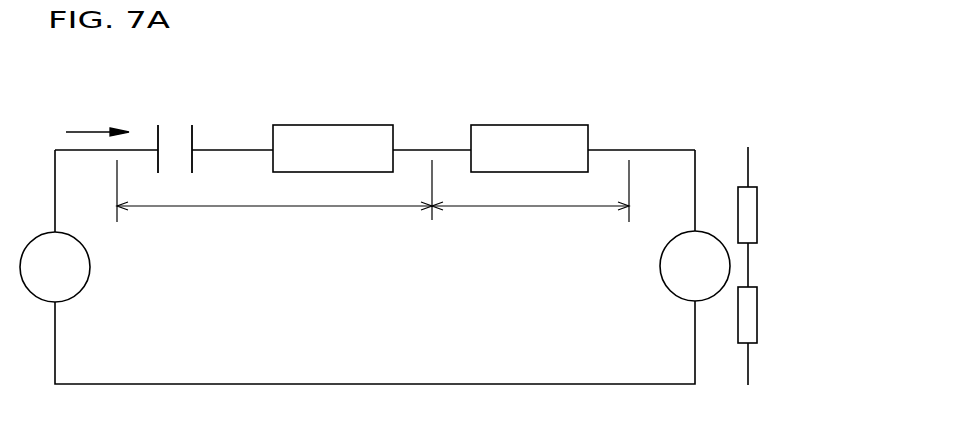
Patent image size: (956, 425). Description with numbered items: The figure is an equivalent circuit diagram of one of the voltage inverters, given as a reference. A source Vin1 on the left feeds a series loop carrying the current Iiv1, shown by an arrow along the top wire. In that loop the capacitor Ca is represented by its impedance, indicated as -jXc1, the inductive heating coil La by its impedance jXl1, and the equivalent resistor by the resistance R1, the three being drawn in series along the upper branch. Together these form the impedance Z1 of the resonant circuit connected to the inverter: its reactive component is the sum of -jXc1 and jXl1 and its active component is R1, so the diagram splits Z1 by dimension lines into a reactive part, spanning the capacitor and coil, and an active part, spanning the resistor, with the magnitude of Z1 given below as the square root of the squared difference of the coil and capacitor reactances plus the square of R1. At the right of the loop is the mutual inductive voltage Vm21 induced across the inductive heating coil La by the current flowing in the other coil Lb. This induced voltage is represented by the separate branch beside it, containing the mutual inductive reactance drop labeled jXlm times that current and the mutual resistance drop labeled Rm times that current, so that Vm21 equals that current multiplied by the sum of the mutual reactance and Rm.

The input voltage source Vin1 is at (55, 267).
The mutual inductive voltage Vm21 is at (695, 266).
The current Iiv1 is at (97, 117).
The impedance of the capacitor jXc1 is at (176, 131).
The impedance of the inductive heating coil jXl1 is at (333, 130).
The resistance R1 is at (529, 130).
The impedance of the resonant circuit Z1 is at (373, 244).
The mutual inductive reactance voltage jXlm is at (793, 217).
The mutual resistance voltage Rm is at (789, 336).